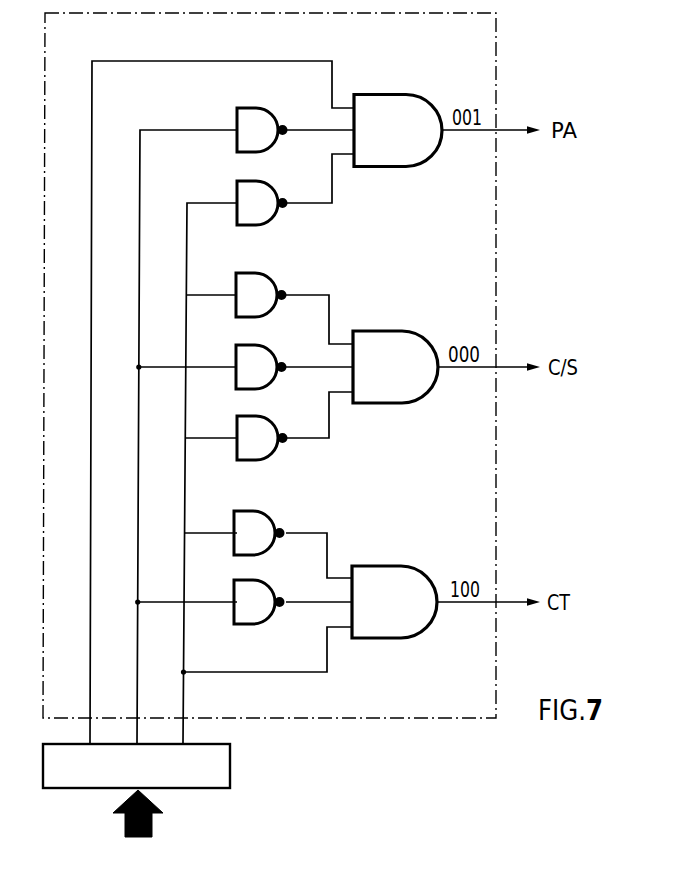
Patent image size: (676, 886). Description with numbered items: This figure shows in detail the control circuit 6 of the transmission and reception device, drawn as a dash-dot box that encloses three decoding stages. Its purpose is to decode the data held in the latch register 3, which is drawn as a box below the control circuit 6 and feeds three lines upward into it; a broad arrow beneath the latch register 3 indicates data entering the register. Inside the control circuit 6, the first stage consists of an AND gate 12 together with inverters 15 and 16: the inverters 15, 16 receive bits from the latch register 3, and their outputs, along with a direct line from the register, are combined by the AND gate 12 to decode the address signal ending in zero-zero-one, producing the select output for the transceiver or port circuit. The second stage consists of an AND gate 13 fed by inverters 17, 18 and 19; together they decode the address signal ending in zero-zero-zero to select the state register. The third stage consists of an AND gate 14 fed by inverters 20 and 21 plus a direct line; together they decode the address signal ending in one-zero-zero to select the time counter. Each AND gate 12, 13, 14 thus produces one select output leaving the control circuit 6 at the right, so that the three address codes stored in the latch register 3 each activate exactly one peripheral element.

The control circuit 6 is at (497, 23).
The latch register 3 is at (231, 749).
The AND gate 12 is at (432, 100).
The AND gate 13 is at (432, 337).
The AND gate 14 is at (431, 573).
The inverter 15 is at (267, 108).
The inverter 16 is at (267, 180).
The inverter 17 is at (266, 274).
The inverter 18 is at (266, 346).
The inverter 19 is at (267, 418).
The inverter 20 is at (265, 513).
The inverter 21 is at (265, 582).